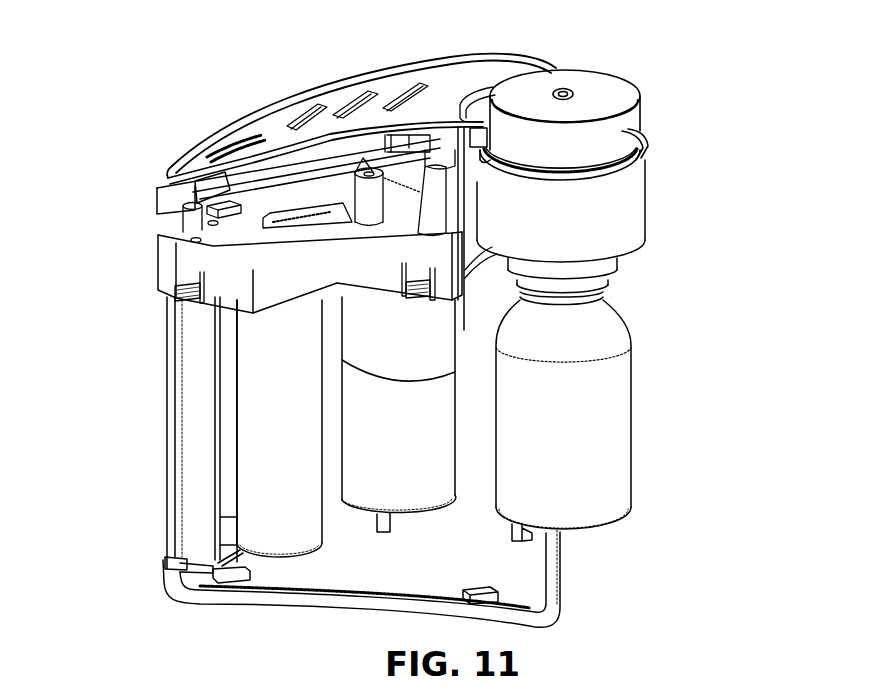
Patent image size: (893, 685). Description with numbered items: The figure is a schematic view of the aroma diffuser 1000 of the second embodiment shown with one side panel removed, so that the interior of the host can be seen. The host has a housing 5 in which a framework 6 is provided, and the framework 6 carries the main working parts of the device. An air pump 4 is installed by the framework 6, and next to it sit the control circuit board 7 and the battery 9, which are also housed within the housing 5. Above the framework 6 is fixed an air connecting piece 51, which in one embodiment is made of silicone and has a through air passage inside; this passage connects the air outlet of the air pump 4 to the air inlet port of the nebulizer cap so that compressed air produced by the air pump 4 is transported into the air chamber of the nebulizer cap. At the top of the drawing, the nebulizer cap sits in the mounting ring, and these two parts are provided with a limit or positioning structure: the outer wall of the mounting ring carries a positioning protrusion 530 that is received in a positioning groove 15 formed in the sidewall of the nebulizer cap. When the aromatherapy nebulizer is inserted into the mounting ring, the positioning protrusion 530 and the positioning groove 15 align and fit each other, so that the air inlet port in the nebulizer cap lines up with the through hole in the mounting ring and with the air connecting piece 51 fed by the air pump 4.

The cleaning device 1000 is at (165, 63).
The air pump 4 is at (405, 430).
The housing 5 is at (165, 330).
The framework 6 is at (200, 501).
The control circuit board 7 is at (157, 188).
The battery 9 is at (257, 517).
The positioning grooves 15 is at (643, 133).
The air connecting piece 51 is at (468, 187).
The positioning protrusion 530 is at (643, 162).